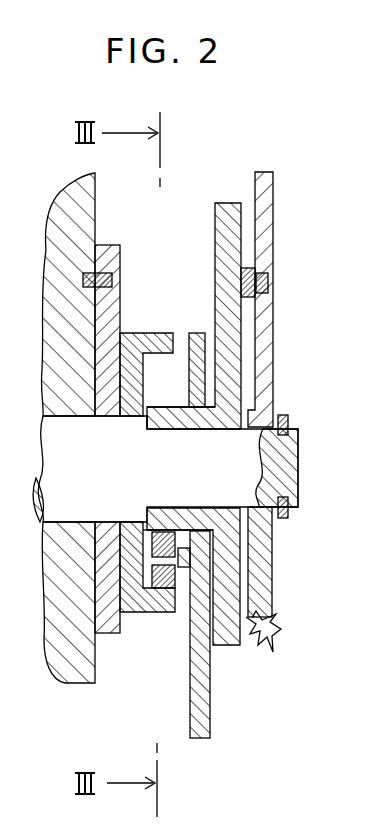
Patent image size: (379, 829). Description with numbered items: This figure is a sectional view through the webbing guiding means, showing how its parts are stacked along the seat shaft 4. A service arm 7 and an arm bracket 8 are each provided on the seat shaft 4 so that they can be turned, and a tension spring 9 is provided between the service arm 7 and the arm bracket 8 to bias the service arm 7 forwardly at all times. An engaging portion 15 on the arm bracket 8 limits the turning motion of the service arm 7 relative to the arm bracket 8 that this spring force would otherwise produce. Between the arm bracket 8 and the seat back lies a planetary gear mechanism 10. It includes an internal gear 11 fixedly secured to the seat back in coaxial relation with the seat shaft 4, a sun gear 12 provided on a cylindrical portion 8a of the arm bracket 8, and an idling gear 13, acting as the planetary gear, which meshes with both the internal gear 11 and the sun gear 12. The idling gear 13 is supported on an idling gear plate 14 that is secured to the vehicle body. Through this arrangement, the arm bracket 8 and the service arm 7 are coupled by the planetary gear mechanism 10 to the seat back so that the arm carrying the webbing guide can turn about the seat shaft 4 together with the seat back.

The seat shaft 4 is at (250, 470).
The service arm 7 is at (267, 248).
The arm bracket 8 is at (222, 248).
The cylindrical portion 8a is at (180, 412).
The tension spring 9 is at (267, 645).
The planetary gear mechanism 10 is at (158, 628).
The internal gear 11 is at (147, 340).
The sun gear 12 is at (167, 430).
The idling gear 13 is at (160, 610).
The idling gear plate 14 is at (202, 697).
The engaging portion 15 is at (270, 287).